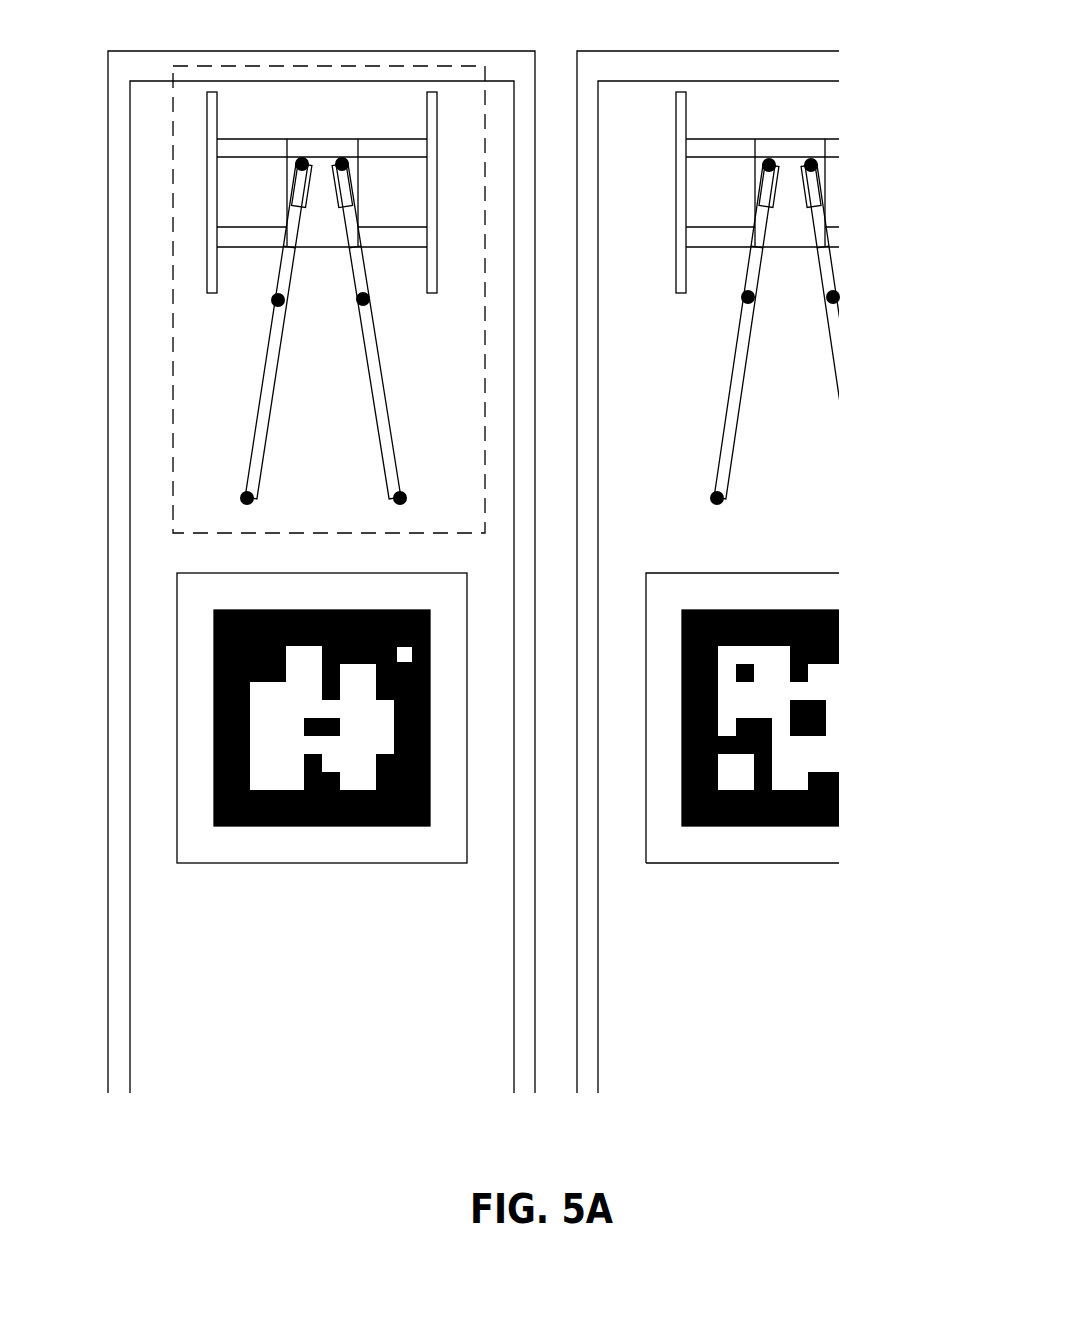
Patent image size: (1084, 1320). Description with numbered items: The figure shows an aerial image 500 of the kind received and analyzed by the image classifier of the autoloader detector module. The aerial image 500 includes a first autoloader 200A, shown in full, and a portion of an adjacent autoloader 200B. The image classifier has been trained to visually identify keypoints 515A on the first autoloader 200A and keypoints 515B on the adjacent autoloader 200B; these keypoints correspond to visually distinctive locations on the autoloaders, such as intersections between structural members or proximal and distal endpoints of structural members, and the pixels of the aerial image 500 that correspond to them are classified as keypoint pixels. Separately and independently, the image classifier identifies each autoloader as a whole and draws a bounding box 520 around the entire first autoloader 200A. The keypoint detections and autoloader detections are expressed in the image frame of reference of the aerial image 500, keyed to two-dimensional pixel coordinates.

The aerial image 500 is at (805, 1113).
The first autoloader 200A is at (210, 405).
The adjacent autoloader 200B is at (792, 413).
The bounding box 520 is at (280, 65).
The keypoints 515A is at (300, 158).
The keypoints 515B is at (770, 159).